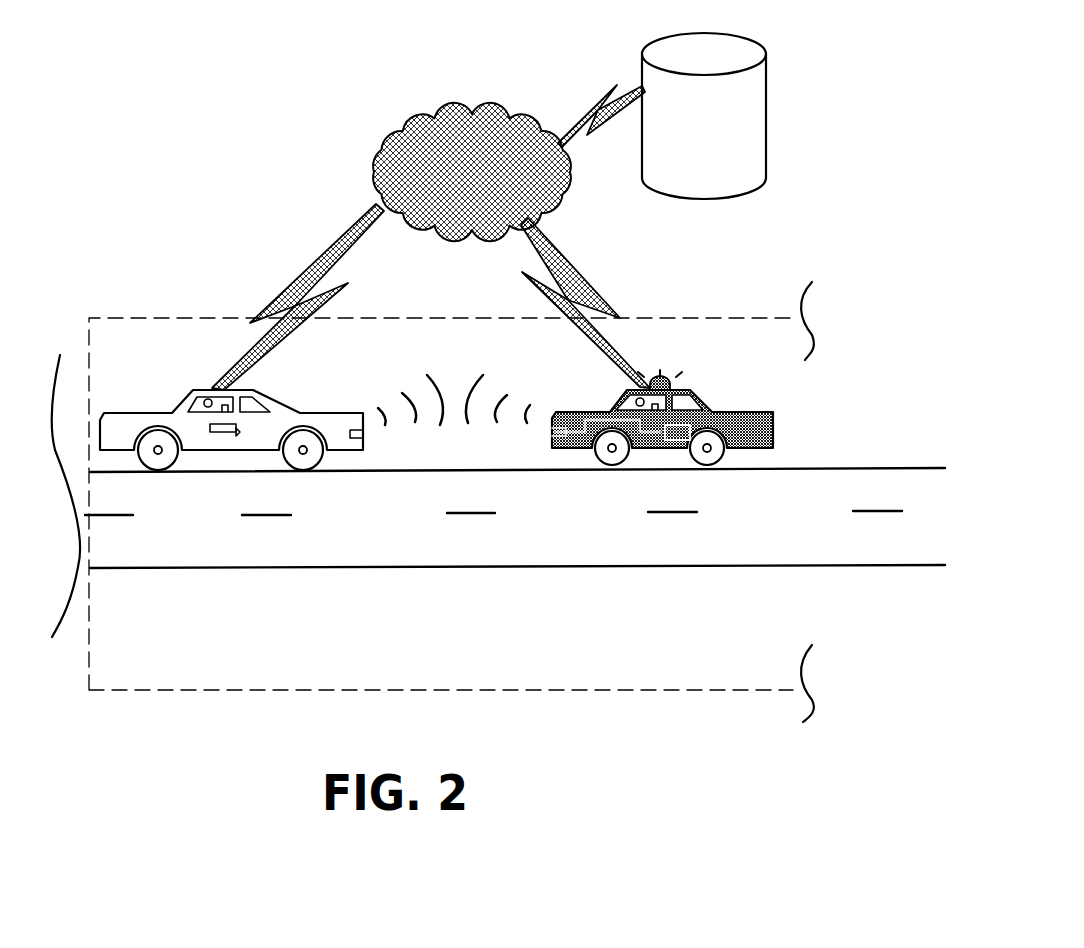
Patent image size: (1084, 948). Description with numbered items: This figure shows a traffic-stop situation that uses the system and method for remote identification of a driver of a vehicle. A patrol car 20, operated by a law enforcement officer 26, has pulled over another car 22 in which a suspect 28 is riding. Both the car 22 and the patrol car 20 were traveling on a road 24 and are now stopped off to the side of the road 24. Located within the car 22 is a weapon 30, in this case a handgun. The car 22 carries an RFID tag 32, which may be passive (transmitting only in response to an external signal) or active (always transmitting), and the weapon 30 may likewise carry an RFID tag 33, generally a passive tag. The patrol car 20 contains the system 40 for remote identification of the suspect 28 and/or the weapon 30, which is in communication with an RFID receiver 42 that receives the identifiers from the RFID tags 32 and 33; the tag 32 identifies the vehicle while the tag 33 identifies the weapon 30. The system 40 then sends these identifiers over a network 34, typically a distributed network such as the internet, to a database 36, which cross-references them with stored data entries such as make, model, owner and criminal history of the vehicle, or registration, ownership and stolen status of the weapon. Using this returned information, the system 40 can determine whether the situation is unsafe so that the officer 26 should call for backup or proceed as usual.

The patrol car 20 is at (674, 459).
The car 22 is at (229, 447).
The road 24 is at (197, 548).
The law enforcement officer 26 is at (645, 380).
The suspect 28 is at (216, 398).
The weapon 30 is at (230, 432).
The RFID tag 32 is at (363, 413).
The RFID tag 33 is at (240, 430).
The network 34 is at (473, 137).
The database 36 is at (745, 123).
The system 40 is at (672, 445).
The RFID receiver 42 is at (551, 432).